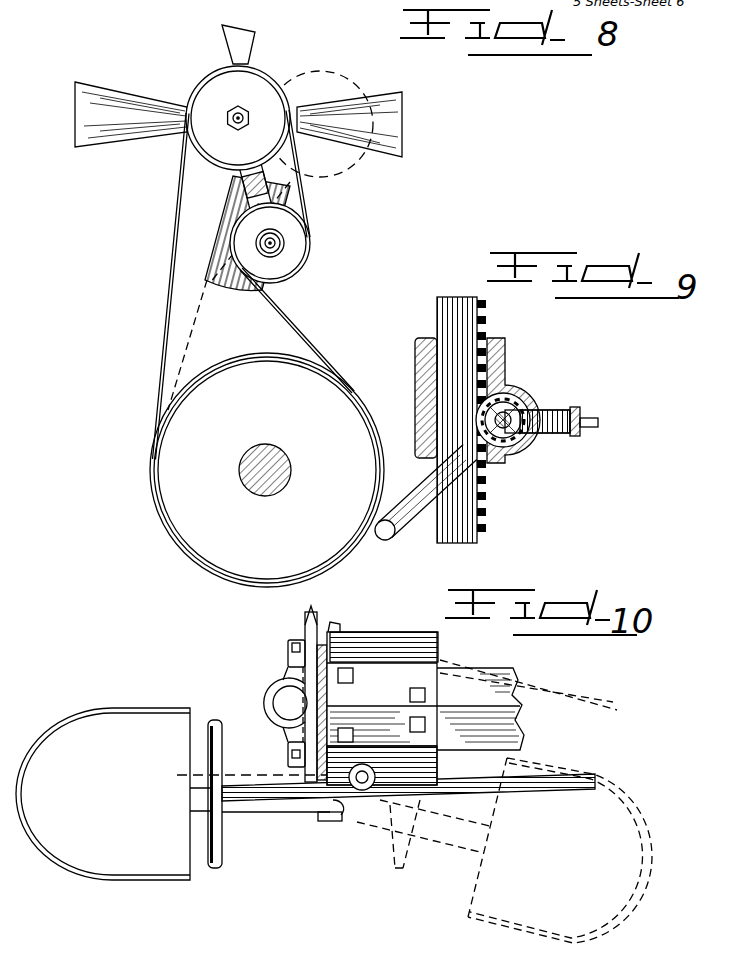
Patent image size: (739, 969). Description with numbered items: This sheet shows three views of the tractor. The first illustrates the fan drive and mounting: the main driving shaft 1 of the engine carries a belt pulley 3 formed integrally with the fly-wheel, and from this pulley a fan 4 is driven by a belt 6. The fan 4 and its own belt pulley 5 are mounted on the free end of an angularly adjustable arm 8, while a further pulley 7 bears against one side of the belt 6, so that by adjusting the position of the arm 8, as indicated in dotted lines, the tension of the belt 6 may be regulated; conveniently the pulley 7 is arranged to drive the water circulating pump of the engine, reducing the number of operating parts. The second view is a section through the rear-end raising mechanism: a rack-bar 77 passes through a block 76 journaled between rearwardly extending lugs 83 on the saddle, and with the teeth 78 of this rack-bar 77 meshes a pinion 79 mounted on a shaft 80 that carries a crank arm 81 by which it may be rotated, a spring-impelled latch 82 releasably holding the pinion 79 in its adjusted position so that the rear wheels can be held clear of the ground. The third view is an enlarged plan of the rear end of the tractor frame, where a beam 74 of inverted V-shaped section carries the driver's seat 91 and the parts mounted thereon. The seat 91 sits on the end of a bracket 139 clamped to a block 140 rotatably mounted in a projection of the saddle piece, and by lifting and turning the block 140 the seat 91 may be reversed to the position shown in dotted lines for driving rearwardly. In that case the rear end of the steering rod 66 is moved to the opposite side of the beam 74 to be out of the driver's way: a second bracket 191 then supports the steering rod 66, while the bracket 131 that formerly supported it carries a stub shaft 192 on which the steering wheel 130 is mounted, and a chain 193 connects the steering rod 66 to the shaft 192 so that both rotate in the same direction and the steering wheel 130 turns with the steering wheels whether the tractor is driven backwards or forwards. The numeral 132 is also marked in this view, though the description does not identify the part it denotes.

In FIG. 8, the main driving shaft 1 is at (265, 470).
In FIG. 8, the belt pulley 3 is at (183, 485).
In FIG. 8, the fan 4 is at (390, 117).
In FIG. 8, the belt pulley 5 is at (262, 78).
In FIG. 8, the belt 6 is at (305, 333).
In FIG. 8, the pulley 7 is at (300, 243).
In FIG. 8, the angularly adjustable arm 8 is at (258, 183).
In FIG. 10, the steering rod 66 is at (605, 690).
In FIG. 10, the beam 74 is at (500, 698).
In FIG. 9, the block 76 is at (503, 357).
In FIG. 10, the block 76 is at (270, 700).
In FIG. 9, the rack-bar 77 is at (452, 315).
In FIG. 9, the teeth 78 is at (487, 303).
In FIG. 9, the pinion 79 is at (517, 397).
In FIG. 9, the shaft 80 is at (530, 450).
In FIG. 9, the crank arm 81 is at (388, 535).
In FIG. 9, the spring-impelled latch 82 is at (558, 438).
In FIG. 10, the lugs 83 is at (290, 665).
In FIG. 10, the driver's seat 91 is at (103, 723).
In FIG. 10, the steering wheel 130 is at (225, 848).
In FIG. 10, the bracket 131 is at (335, 806).
In FIG. 10, the pin 132 is at (362, 802).
In FIG. 10, the bracket 139 is at (265, 805).
In FIG. 10, the block 140 is at (337, 805).
In FIG. 10, the second bracket 191 is at (353, 632).
In FIG. 10, the stub shaft 192 is at (234, 783).
In FIG. 10, the chain 193 is at (293, 727).